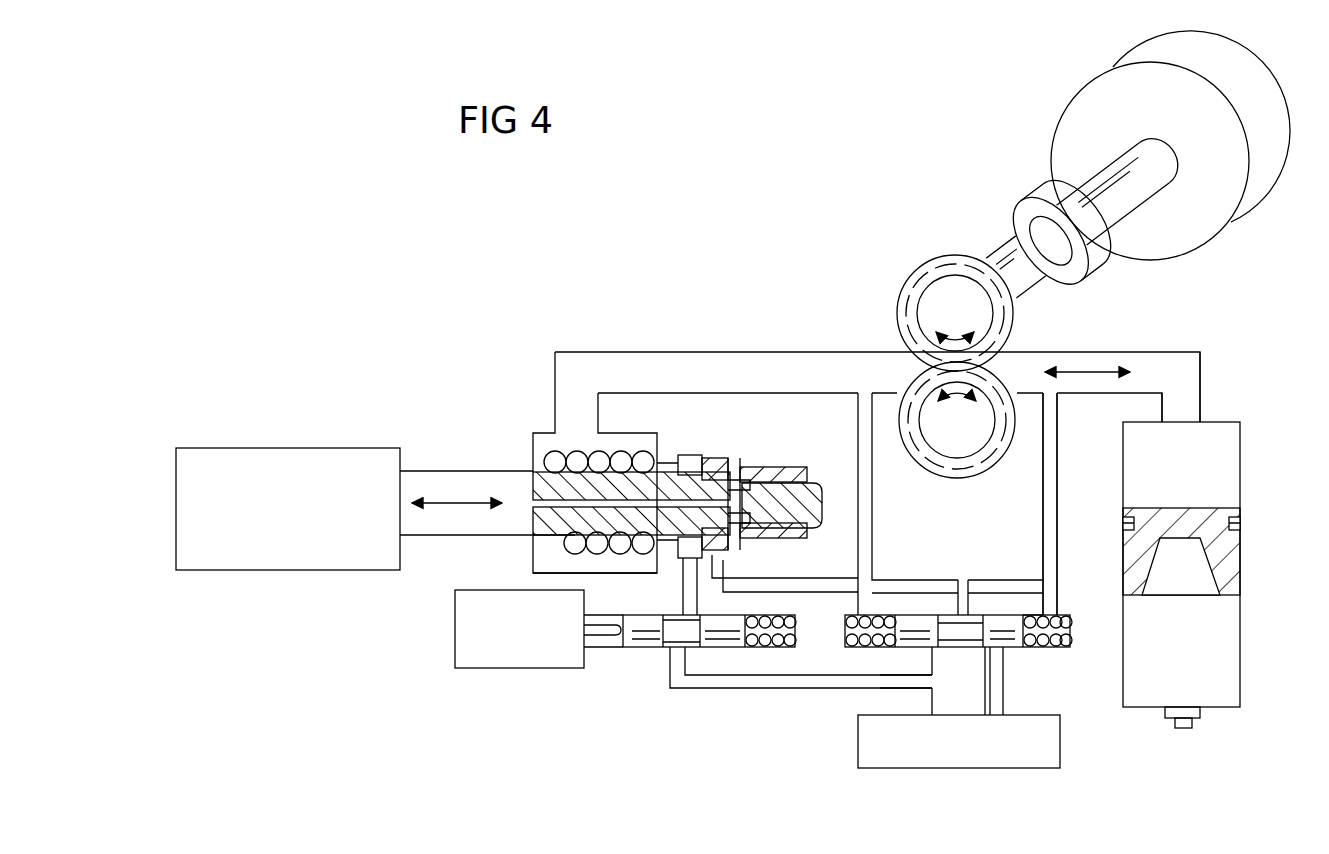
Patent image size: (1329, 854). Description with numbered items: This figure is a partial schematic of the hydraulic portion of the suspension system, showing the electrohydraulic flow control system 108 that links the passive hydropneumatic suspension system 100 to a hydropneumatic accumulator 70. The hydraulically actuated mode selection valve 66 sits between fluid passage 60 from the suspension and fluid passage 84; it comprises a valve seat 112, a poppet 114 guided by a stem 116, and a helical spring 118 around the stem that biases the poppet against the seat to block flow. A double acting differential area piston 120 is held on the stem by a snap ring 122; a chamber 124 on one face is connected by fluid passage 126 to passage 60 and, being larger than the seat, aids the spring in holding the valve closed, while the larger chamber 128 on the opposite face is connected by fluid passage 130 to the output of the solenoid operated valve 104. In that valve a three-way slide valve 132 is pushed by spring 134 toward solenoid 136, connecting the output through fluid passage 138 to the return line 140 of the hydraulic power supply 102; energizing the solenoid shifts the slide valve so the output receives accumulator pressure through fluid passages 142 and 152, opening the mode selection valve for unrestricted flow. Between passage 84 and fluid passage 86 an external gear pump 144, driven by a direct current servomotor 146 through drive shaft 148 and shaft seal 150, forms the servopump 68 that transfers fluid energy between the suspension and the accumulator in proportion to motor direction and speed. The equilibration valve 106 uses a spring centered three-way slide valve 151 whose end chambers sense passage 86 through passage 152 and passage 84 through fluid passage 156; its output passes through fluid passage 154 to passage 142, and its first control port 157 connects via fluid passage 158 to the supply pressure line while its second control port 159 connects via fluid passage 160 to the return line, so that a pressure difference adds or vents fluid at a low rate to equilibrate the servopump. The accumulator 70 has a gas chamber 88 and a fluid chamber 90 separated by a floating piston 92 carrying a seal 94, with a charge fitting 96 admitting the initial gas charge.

The passive hydropneumatic suspension system 100 is at (272, 432).
The fluid passage 60 is at (437, 468).
The fluid passage 84 is at (750, 365).
The fluid passage 86 is at (1170, 353).
The electrohydraulic flow control system 108 is at (528, 432).
The mode selection valve 66 is at (710, 395).
The fluid passage 126 is at (580, 488).
The helical spring 118 is at (598, 558).
The stem 116 is at (625, 480).
The valve seat 112 is at (535, 525).
The poppet 114 is at (543, 548).
The chamber 128 is at (690, 458).
The chamber 124 is at (790, 465).
The snap ring 122 is at (805, 470).
The double acting differential area piston 120 is at (820, 483).
The fluid passage 130 is at (684, 566).
The fluid passage 142 is at (818, 588).
The servopump 68 is at (949, 353).
The external gear pump 144 is at (905, 268).
The direct current servomotor 146 is at (1097, 90).
The drive shaft 148 is at (1160, 185).
The shaft seal 150 is at (1050, 192).
The fluid passage 156 is at (863, 492).
The fluid passage 154 is at (958, 598).
The fluid passage 152 is at (1080, 487).
The equilibration valve 106 is at (978, 646).
The fluid passage 160 is at (928, 652).
The first control port 157 is at (1000, 652).
The spring centered three-way slide valve 151 is at (1035, 612).
The second control port 159 is at (930, 655).
The fluid passage 158 is at (1003, 690).
The hydraulic power supply 102 is at (855, 745).
The solenoid operated valve 104 is at (673, 687).
The three way, spring biased, solenoid operated slide valve 132 is at (645, 632).
The spring 134 is at (778, 650).
The solenoid 136 is at (517, 655).
The fluid passage 138 is at (800, 690).
The return line 140 is at (903, 692).
The hydropneumatic accumulator 70 is at (1211, 571).
The fluid chamber 90 is at (1220, 463).
The floating piston 92 is at (1228, 564).
The seal 94 is at (1240, 522).
The gas chamber 88 is at (1220, 668).
The charge fitting 96 is at (1190, 728).